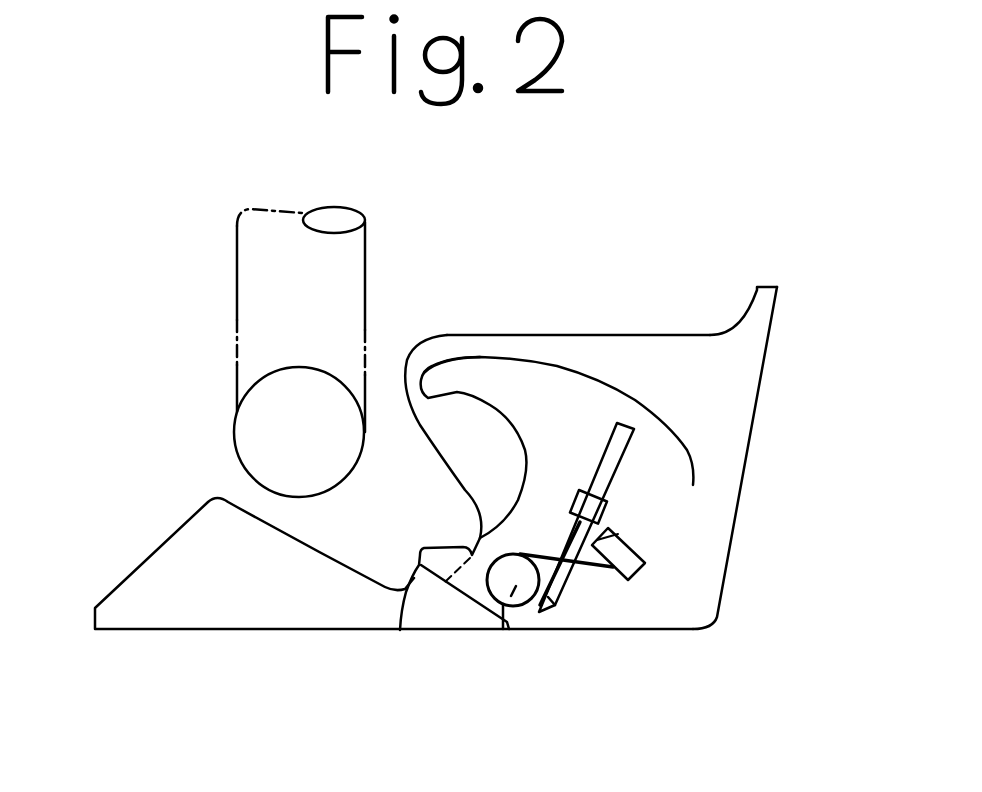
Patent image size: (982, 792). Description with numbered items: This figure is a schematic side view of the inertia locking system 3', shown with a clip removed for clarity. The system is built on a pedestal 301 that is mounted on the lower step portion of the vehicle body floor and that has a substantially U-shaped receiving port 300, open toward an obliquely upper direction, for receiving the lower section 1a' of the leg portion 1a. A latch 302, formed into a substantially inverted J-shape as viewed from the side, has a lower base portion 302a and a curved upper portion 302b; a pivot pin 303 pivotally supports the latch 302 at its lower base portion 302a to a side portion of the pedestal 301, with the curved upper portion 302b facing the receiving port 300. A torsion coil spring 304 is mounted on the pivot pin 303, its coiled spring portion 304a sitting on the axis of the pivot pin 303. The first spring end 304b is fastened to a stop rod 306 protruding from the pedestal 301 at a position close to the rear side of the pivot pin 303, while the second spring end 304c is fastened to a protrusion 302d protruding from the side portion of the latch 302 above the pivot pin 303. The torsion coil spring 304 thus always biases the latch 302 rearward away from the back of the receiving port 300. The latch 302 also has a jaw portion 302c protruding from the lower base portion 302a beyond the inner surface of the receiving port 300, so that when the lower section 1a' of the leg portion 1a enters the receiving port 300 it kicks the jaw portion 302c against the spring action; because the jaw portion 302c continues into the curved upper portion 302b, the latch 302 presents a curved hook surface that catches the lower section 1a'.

The leg portion 1a is at (250, 319).
The lower section of the leg portion 1a' is at (231, 432).
The inertia locking system 3' is at (578, 263).
The receiving port 300 is at (295, 531).
The pedestal 301 is at (152, 543).
The latch 302 is at (557, 367).
The lower base portion 302a is at (555, 605).
The curved upper portion 302b is at (452, 370).
The jaw portion 302c is at (400, 630).
The protrusion 302d is at (627, 453).
The pivot pin 303 is at (503, 629).
The torsion coil spring 304 is at (596, 574).
The coiled spring portion 304a is at (540, 600).
The first spring end 304b is at (693, 485).
The second spring end 304c is at (592, 488).
The stop rod 306 is at (749, 458).